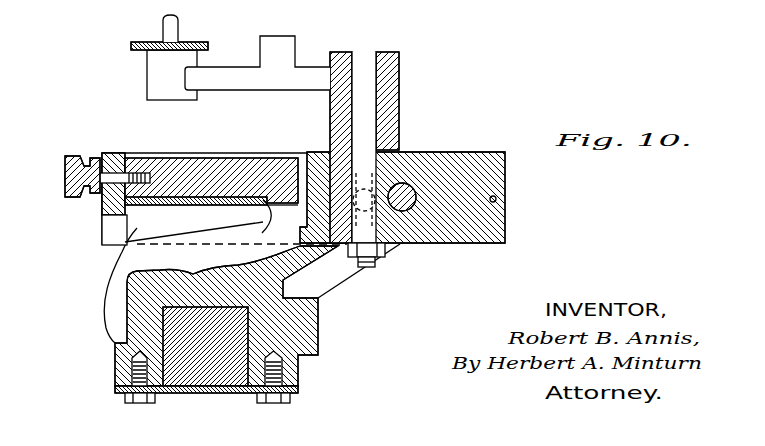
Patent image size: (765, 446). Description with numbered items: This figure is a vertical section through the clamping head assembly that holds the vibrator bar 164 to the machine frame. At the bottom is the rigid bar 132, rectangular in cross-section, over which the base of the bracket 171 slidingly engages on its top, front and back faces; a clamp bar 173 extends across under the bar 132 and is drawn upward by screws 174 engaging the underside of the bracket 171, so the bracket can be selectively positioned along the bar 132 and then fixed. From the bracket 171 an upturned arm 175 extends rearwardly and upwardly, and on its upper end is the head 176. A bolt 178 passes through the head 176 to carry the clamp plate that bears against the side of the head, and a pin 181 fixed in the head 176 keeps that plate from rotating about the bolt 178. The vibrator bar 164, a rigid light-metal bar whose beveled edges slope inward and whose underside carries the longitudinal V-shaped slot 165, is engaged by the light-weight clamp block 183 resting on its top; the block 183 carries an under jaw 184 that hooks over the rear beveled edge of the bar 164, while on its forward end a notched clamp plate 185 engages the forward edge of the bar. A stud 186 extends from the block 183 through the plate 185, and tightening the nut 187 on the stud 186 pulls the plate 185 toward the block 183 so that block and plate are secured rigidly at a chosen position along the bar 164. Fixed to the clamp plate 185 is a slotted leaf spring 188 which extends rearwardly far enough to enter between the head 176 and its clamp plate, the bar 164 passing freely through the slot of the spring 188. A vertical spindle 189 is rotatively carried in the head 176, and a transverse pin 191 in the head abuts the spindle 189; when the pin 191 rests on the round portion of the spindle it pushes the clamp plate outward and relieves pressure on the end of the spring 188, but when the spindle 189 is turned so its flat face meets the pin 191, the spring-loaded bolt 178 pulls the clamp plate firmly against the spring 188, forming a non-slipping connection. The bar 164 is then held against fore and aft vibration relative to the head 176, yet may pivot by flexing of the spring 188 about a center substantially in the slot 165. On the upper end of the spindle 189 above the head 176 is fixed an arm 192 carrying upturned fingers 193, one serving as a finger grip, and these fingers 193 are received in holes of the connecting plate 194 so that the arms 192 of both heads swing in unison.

The rigid bar 132 is at (200, 388).
The vibrator bar 164 is at (150, 205).
The slot 165 is at (212, 204).
The left bracket 171 is at (310, 325).
The clamp bar 173 is at (298, 388).
The screws 174 is at (127, 400).
The upturned arm 175 is at (352, 278).
The head 176 is at (497, 171).
The bolt 178 is at (408, 201).
The pin 181 is at (497, 200).
The clamp block 183 is at (238, 165).
The under jaw 184 is at (268, 226).
The clamp plate 185 is at (110, 228).
The stud 186 is at (65, 179).
The nut 187 is at (65, 161).
The leaf spring 188 is at (172, 154).
The vertical spindle 189 is at (372, 112).
The pin 191 is at (385, 245).
The arm 192 is at (246, 86).
The upturned fingers 193 is at (168, 26).
The connecting plate 194 is at (135, 47).